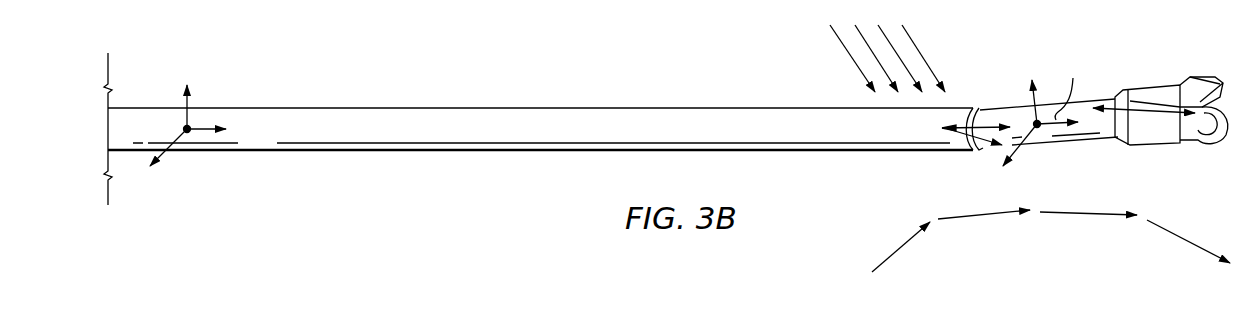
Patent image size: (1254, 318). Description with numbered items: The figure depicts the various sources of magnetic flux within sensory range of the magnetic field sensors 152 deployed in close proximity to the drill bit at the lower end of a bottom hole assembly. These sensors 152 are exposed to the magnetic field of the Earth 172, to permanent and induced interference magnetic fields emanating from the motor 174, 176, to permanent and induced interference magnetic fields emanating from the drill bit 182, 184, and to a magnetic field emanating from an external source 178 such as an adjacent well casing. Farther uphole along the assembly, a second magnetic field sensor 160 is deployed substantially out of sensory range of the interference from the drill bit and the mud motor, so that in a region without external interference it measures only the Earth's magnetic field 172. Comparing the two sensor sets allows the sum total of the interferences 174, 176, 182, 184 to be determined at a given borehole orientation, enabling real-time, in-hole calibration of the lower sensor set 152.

The magnetic field sensors 152 is at (1042, 130).
The second magnetic field sensor 160 is at (187, 133).
The magnetic field of the Earth 172 is at (850, 57).
The permanent interference magnetic field emanating from the motor 174 is at (994, 122).
The induced interference magnetic field emanating from the motor 176 is at (958, 134).
The external source magnetic field 178 is at (975, 218).
The permanent interference magnetic field emanating from the drill bit 182 is at (1120, 97).
The induced interference magnetic field emanating from the drill bit 184 is at (1166, 112).